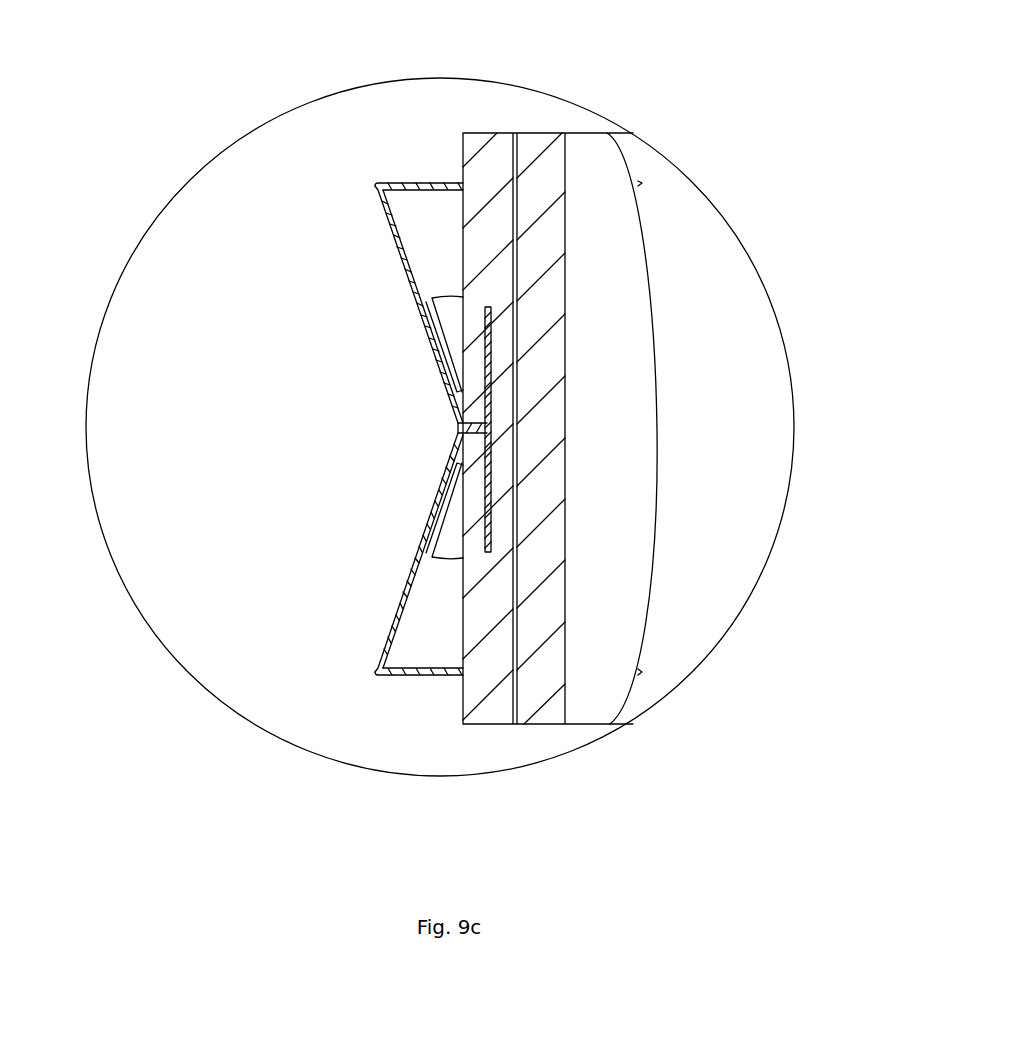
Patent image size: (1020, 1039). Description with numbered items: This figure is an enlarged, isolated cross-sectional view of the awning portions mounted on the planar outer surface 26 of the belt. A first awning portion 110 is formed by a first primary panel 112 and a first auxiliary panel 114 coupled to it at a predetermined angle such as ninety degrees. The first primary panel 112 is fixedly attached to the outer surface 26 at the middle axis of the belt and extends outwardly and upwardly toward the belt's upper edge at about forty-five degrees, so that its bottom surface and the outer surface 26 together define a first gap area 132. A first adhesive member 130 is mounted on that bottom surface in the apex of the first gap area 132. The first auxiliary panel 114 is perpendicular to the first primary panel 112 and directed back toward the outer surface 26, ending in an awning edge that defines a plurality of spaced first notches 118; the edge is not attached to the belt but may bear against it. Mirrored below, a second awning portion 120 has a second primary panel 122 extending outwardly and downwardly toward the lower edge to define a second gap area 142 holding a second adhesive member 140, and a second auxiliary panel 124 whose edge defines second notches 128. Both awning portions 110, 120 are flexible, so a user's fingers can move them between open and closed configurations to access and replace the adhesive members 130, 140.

The outer surface 26 is at (463, 705).
The first awning portion 110 is at (270, 213).
The first primary panel 112 is at (395, 247).
The first auxiliary panel 114 is at (401, 182).
The first notches 118 is at (448, 182).
The second awning portion 120 is at (254, 642).
The second primary panel 122 is at (397, 598).
The second auxiliary panel 124 is at (390, 675).
The second notches 128 is at (445, 675).
The first adhesive member 130 is at (442, 342).
The first gap area 132 is at (412, 208).
The second adhesive member 140 is at (443, 505).
The second gap area 142 is at (422, 645).